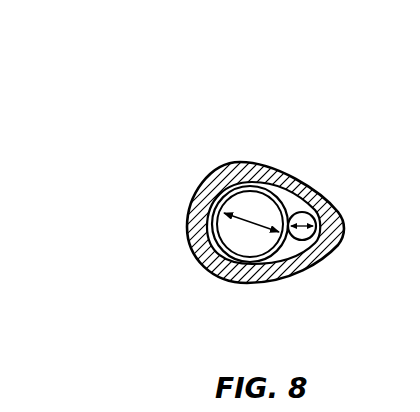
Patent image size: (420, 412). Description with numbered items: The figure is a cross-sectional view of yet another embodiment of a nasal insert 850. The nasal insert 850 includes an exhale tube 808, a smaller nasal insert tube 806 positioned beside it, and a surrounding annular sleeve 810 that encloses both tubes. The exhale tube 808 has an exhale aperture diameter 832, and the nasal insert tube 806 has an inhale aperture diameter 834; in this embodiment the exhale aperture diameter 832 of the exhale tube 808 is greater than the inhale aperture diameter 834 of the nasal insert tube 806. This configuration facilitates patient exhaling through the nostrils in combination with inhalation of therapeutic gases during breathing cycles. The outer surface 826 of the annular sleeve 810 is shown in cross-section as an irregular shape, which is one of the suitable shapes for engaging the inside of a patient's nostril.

The nasal insert 850 is at (112, 130).
The outer surface 826 is at (212, 175).
The exhale tube 808 is at (245, 180).
The nasal insert tube 806 is at (308, 200).
The annular sleeve 810 is at (200, 238).
The exhale aperture diameter 832 is at (252, 226).
The inhale aperture diameter 834 is at (302, 227).